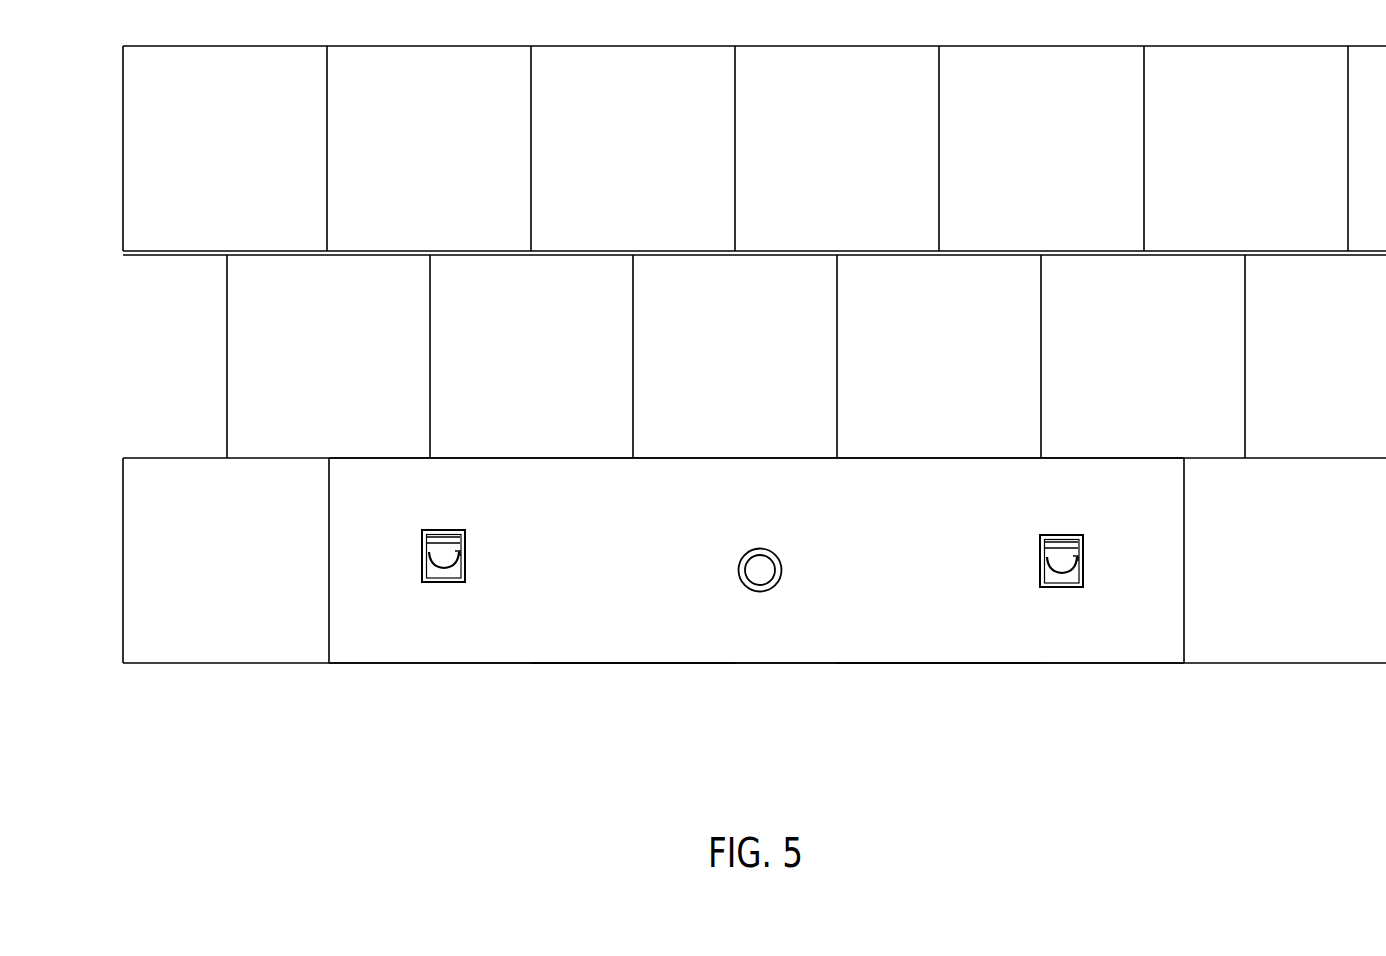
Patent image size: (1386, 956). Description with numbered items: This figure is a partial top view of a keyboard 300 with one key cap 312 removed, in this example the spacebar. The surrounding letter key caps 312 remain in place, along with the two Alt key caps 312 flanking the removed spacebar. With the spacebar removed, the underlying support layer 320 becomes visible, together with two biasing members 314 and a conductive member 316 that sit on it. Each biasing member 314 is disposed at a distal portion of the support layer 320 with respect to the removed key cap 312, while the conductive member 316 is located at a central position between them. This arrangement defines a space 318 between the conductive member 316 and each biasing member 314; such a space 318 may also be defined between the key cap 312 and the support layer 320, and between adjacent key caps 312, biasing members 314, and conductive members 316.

The virtual keyboard 300 is at (430, 786).
The key cap 312 is at (272, 663).
The biasing member 314 is at (453, 582).
The conductive member 316 is at (762, 593).
The space 318 is at (607, 583).
The support layer 320 is at (1147, 642).